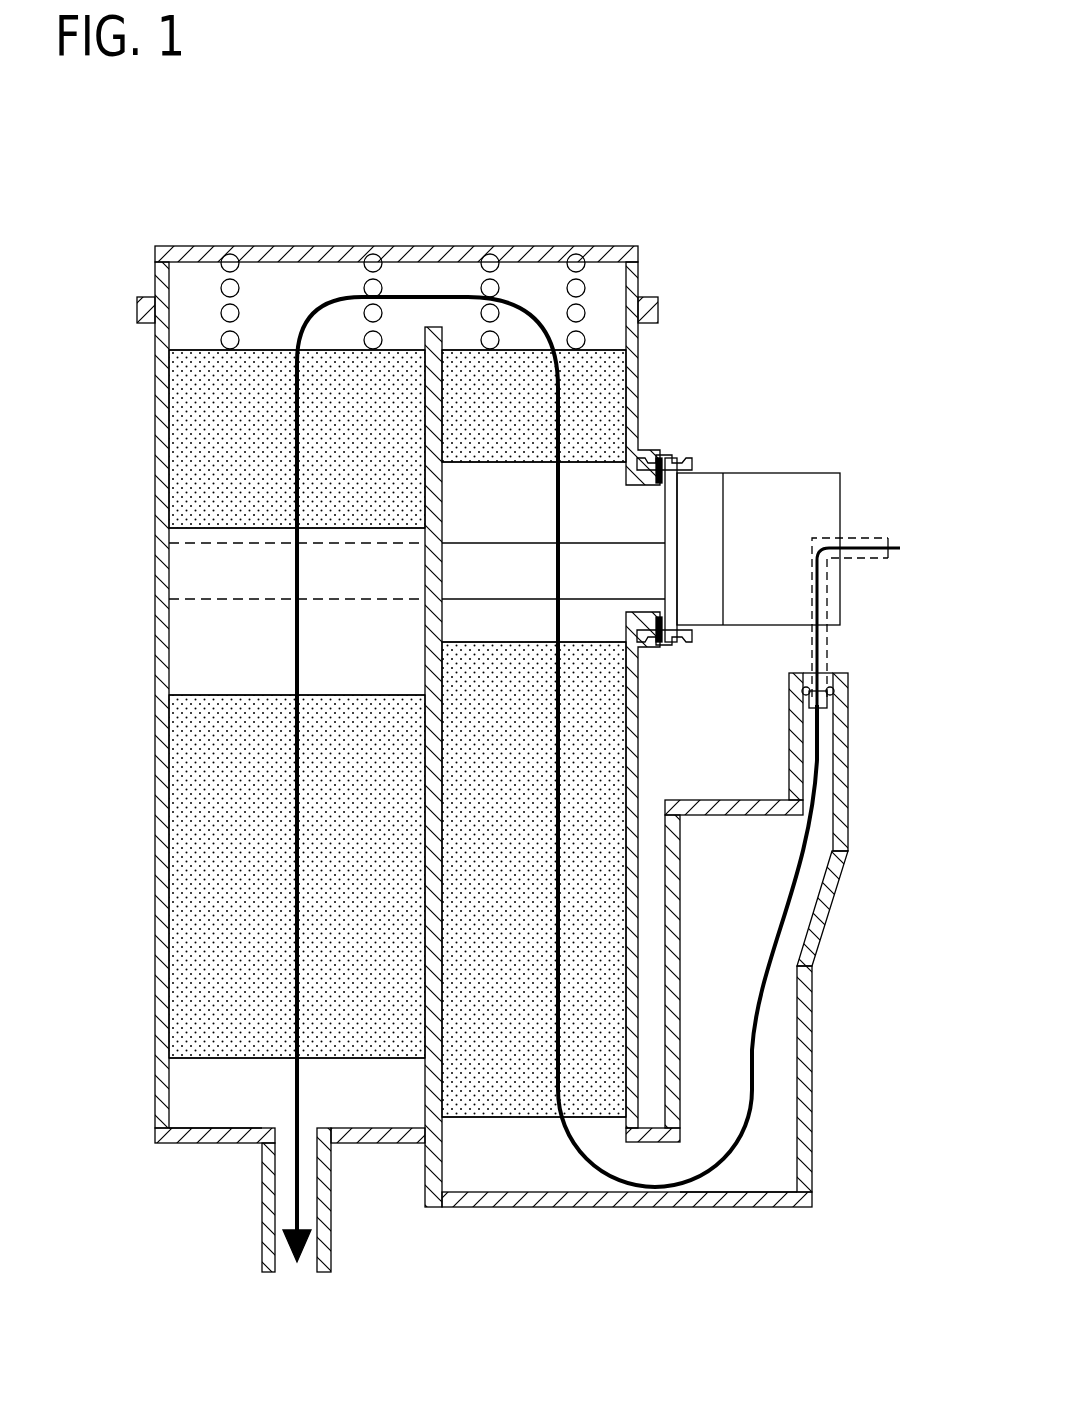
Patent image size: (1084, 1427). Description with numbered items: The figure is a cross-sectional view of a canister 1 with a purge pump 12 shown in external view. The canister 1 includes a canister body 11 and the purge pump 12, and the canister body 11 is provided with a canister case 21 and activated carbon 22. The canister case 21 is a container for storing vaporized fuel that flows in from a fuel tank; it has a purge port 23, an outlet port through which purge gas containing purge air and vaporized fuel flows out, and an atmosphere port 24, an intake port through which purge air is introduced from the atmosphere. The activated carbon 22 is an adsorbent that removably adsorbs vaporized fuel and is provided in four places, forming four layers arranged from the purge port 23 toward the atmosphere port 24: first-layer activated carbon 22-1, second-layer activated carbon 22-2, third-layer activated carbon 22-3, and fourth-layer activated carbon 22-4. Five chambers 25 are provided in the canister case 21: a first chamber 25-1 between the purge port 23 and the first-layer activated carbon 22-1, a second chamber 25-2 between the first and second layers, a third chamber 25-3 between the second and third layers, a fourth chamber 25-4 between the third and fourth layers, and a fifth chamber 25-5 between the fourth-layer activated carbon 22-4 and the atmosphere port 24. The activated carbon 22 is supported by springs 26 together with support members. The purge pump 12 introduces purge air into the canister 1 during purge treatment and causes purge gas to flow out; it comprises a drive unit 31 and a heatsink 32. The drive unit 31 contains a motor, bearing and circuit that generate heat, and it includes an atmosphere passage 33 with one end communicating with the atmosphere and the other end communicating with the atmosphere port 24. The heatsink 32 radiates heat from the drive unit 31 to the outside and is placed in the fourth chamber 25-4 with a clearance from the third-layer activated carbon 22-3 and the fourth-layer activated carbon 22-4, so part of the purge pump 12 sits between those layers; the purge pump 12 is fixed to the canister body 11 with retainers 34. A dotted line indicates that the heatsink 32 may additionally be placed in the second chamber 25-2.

The canister 1 is at (745, 200).
The canister body 11 is at (247, 248).
The purge pump 12 is at (801, 547).
The canister case 21 is at (405, 253).
The activated carbon 22 is at (426, 804).
The first-layer activated carbon 22-1 is at (190, 965).
The second-layer activated carbon 22-2 is at (185, 465).
The third-layer activated carbon 22-3 is at (605, 373).
The fourth-layer activated carbon 22-4 is at (495, 1068).
The purge port 23 is at (330, 1255).
The atmosphere port 24 is at (848, 690).
The chambers 25 is at (506, 704).
The first chamber 25-1 is at (200, 1098).
The second chamber 25-2 is at (180, 655).
The third chamber 25-3 is at (530, 282).
The fourth chamber 25-4 is at (600, 478).
The fifth chamber 25-5 is at (782, 1092).
The springs 26 is at (228, 288).
The drive unit 31 is at (762, 513).
The heatsink 32 is at (185, 583).
The atmosphere passage 33 is at (832, 540).
The retainers 34 is at (670, 453).